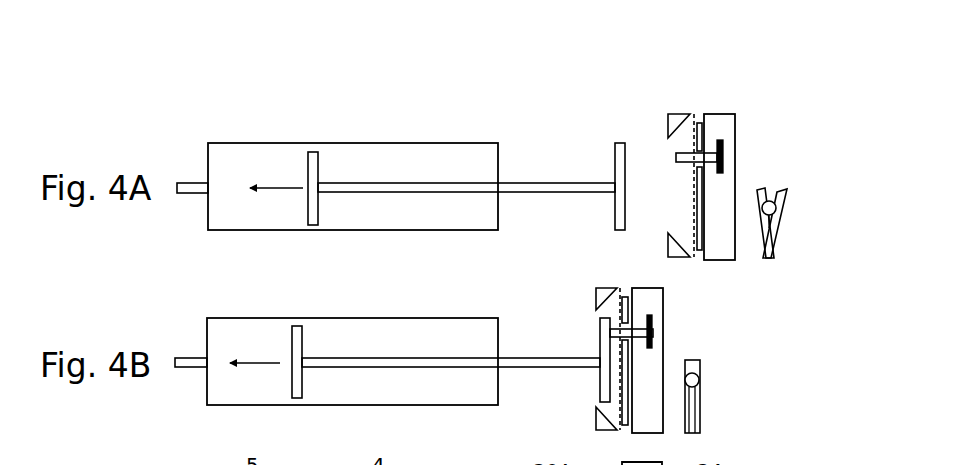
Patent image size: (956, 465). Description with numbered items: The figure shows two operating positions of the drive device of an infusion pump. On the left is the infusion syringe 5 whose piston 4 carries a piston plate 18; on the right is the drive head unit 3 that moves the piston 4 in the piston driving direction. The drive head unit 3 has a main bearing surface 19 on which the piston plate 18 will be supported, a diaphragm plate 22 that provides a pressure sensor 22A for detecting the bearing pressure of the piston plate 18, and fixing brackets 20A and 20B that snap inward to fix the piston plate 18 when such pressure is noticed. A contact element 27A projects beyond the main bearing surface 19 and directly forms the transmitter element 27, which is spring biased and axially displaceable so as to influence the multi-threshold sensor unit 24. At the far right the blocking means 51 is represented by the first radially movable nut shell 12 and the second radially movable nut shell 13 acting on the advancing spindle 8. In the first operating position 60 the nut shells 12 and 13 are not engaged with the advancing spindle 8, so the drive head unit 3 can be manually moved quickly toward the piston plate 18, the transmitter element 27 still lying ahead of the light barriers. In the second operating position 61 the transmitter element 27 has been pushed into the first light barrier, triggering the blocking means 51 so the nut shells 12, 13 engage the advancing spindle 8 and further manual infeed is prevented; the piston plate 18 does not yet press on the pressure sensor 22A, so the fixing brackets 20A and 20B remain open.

In FIG. 4A, the drive head unit 3 is at (720, 122).
In FIG. 4B, the drive head unit 3 is at (647, 360).
In FIG. 4A, the piston 4 is at (372, 188).
In FIG. 4B, the piston 4 is at (368, 363).
In FIG. 4A, the infusion syringe 5 is at (263, 152).
In FIG. 4B, the infusion syringe 5 is at (245, 330).
In FIG. 4A, the advancing spindle 8 is at (765, 199).
In FIG. 4B, the advancing spindle 8 is at (700, 380).
In FIG. 4A, the first radially movable nut shell 12 is at (765, 237).
In FIG. 4B, the first radially movable nut shell 12 is at (700, 362).
In FIG. 4A, the second radially movable nut shell 13 is at (782, 190).
In FIG. 4B, the second radially movable nut shell 13 is at (700, 412).
In FIG. 4A, the piston plate 18 is at (615, 143).
In FIG. 4B, the piston plate 18 is at (600, 332).
In FIG. 4A, the main bearing surface 19 is at (690, 225).
In FIG. 4B, the main bearing surface 19 is at (619, 398).
In FIG. 4A, the fixing bracket 20A is at (678, 120).
In FIG. 4B, the fixing bracket 20A is at (600, 297).
In FIG. 4A, the fixing bracket 20B is at (677, 250).
In FIG. 4B, the fixing bracket 20B is at (598, 423).
In FIG. 4A, the diaphragm plate 22 is at (698, 113).
In FIG. 4B, the diaphragm plate 22 is at (620, 288).
In FIG. 4A, the pressure sensor 22A is at (697, 197).
In FIG. 4B, the pressure sensor 22A is at (628, 408).
In FIG. 4A, the multi-threshold sensor unit 24 is at (722, 136).
In FIG. 4B, the multi-threshold sensor unit 24 is at (645, 311).
In FIG. 4A, the transmitter element 27 is at (676, 153).
In FIG. 4B, the transmitter element 27 is at (653, 333).
In FIG. 4A, the contact element 27A is at (674, 158).
In FIG. 4B, the contact element 27A is at (611, 336).
In FIG. 4A, the blocking means 51 is at (774, 166).
In FIG. 4B, the blocking means 51 is at (749, 399).
In FIG. 4A, the first operating position 60 is at (627, 85).
In FIG. 4B, the second operating position 61 is at (516, 299).